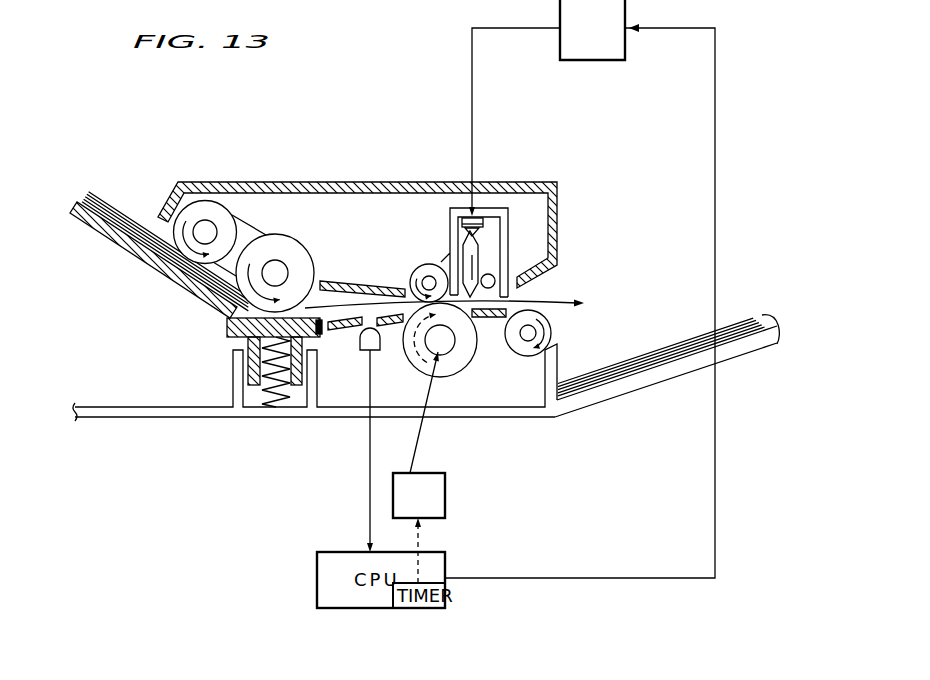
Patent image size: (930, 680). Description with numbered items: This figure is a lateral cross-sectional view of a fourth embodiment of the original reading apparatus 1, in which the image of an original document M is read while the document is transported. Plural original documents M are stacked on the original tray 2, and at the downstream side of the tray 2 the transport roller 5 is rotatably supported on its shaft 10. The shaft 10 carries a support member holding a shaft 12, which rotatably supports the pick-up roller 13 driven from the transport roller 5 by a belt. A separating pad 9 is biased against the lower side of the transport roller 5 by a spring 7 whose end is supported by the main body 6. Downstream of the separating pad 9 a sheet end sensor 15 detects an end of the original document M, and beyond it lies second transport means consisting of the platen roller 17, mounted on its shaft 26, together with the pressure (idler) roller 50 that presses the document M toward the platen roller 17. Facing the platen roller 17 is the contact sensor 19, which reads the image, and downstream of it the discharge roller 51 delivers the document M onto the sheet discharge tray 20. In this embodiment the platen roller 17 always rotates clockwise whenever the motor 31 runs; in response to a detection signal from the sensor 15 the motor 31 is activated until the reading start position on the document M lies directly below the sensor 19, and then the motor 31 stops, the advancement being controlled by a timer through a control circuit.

The original reading apparatus 1 is at (380, 102).
The original tray 2 is at (121, 238).
The transport roller 5 is at (290, 253).
The main body 6 is at (160, 413).
The spring 7 is at (262, 400).
The separating pad 9 is at (238, 322).
The shaft of transport roller 10 is at (273, 262).
The shaft of pick-up roller 12 is at (208, 226).
The pick-up roller 13 is at (200, 211).
The sheet end sensor 15 is at (363, 334).
The platen roller 17 is at (462, 357).
The contact sensor 19 is at (482, 205).
The sheet discharge tray 20 is at (627, 392).
The shaft of platen roller 26 is at (432, 346).
The motor 31 is at (447, 490).
The pressure roller 50 is at (428, 265).
The discharge roller 51 is at (525, 348).
The original document M is at (123, 207).